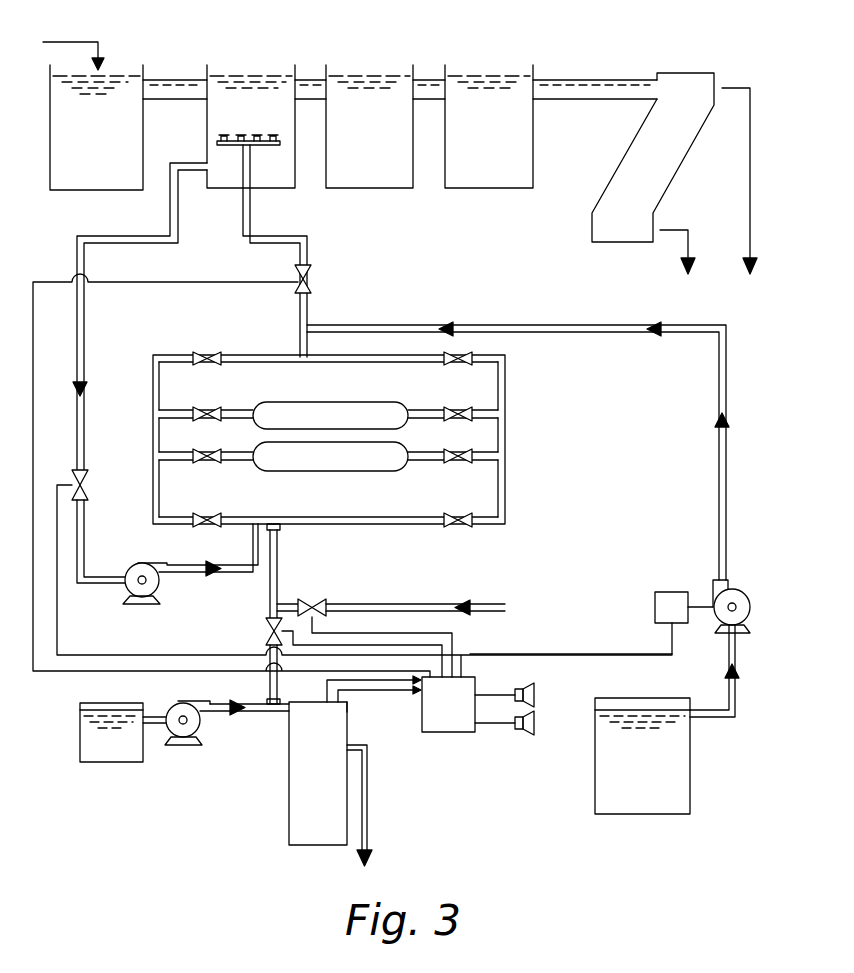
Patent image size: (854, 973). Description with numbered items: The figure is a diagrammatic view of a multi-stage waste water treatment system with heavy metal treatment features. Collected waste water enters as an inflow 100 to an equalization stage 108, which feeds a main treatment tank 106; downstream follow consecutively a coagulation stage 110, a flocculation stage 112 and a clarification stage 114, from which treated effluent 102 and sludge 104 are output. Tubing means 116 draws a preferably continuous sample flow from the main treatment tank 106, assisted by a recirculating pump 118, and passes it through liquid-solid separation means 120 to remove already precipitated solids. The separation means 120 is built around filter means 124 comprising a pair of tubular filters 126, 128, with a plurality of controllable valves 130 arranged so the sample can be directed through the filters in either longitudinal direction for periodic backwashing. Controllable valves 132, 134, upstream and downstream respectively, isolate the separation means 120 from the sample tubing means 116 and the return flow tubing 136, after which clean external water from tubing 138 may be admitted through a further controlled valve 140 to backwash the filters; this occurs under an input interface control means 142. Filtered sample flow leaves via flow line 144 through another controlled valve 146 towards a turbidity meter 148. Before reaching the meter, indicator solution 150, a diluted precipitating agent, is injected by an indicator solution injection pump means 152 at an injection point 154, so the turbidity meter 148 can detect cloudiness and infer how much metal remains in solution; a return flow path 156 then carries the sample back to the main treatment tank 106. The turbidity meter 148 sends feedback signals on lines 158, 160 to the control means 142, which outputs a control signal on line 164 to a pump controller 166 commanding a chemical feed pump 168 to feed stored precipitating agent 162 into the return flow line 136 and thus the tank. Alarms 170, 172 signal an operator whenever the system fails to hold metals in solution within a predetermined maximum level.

The inflow 100 is at (76, 42).
The treated effluent 102 is at (753, 172).
The sludge 104 is at (690, 236).
The main treatment tank 106 is at (275, 182).
The equalization stage 108 is at (110, 153).
The coagulation stage 110 is at (382, 153).
The flocculation stage 112 is at (502, 153).
The clarification stage 114 is at (672, 158).
The tubing means 116 is at (130, 248).
The recirculating pump 118 is at (143, 600).
The liquid-solid separation means 120 is at (384, 439).
The filter means 124 is at (332, 419).
The tubular filter 126 is at (338, 425).
The tubular filter 128 is at (333, 465).
The controllable valves 130 is at (214, 366).
The controllable valve 132 is at (88, 492).
The controllable valve 134 is at (312, 290).
The return flow tubing 136 is at (312, 246).
The tubing 138 is at (364, 603).
The controlled valve 140 is at (312, 599).
The input interface control means 142 is at (462, 716).
The flow line 144 is at (281, 565).
The controlled valve 146 is at (265, 631).
The turbidity meter 148 is at (330, 829).
The indicator solution 150 is at (78, 736).
The indicator solution injection pump means 152 is at (195, 744).
The injection point 154 is at (278, 716).
The return flow path 156 is at (369, 815).
The line 158 is at (366, 706).
The line 160 is at (372, 692).
The precipitating agent 162 is at (655, 777).
The line 164 is at (563, 652).
The pump controller 166 is at (684, 617).
The chemical feed pump 168 is at (742, 597).
The alarm 170 is at (537, 692).
The alarm 172 is at (537, 724).